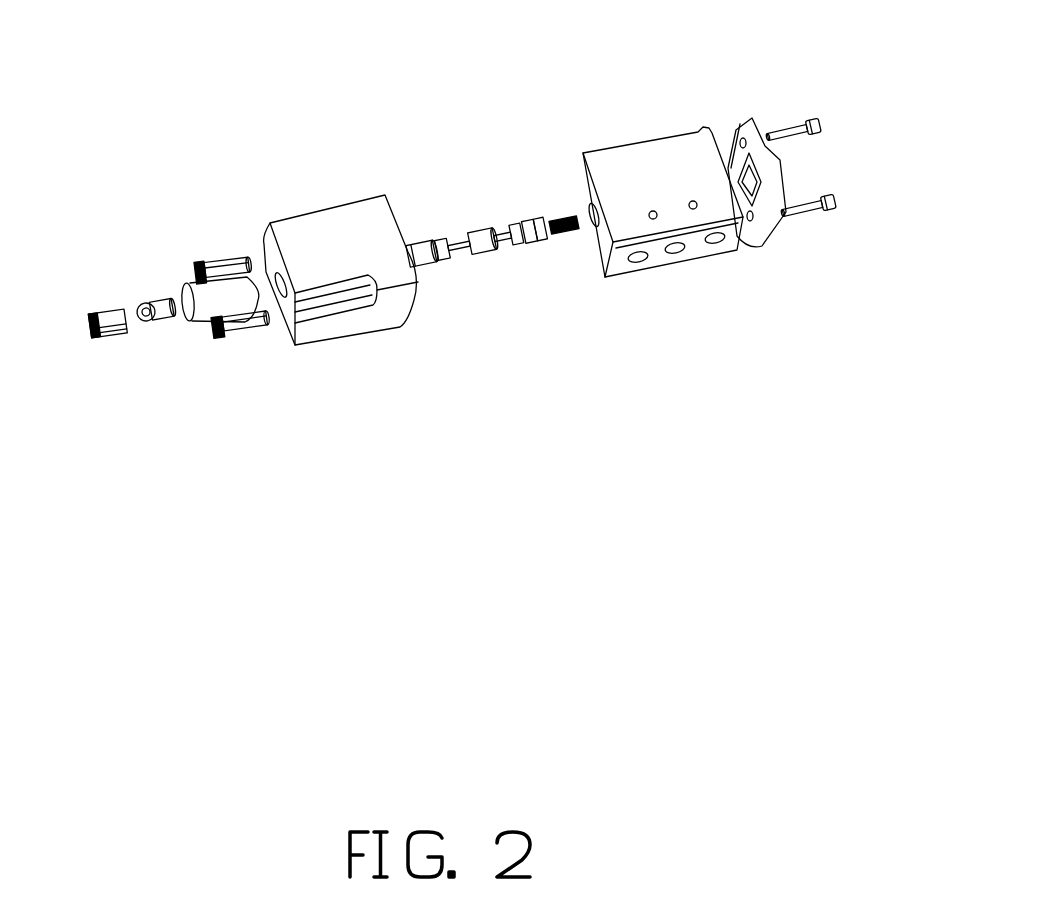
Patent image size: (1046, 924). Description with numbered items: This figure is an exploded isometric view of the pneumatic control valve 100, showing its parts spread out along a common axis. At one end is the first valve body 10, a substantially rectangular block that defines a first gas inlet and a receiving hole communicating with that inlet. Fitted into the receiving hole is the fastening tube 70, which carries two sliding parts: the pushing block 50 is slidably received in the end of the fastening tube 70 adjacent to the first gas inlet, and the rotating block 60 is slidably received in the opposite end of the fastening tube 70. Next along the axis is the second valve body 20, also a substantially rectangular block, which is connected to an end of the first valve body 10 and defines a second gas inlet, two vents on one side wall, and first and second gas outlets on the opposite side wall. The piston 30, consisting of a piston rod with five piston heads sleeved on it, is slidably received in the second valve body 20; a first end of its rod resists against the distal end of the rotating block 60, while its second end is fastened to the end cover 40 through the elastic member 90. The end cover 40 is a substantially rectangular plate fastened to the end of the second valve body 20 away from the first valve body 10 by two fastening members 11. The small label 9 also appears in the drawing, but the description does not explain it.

The pneumatic control valve 100 is at (382, 124).
The first valve body 10 is at (346, 237).
The second valve body 20 is at (665, 177).
The piston 30 is at (484, 212).
The end cover 40 is at (751, 118).
The fastening members 11 is at (800, 118).
The pushing block 50 is at (117, 312).
The rotating block 60 is at (155, 326).
The fastening tube 70 is at (221, 291).
The elastic member 90 is at (562, 213).
The seal 9 is at (146, 270).